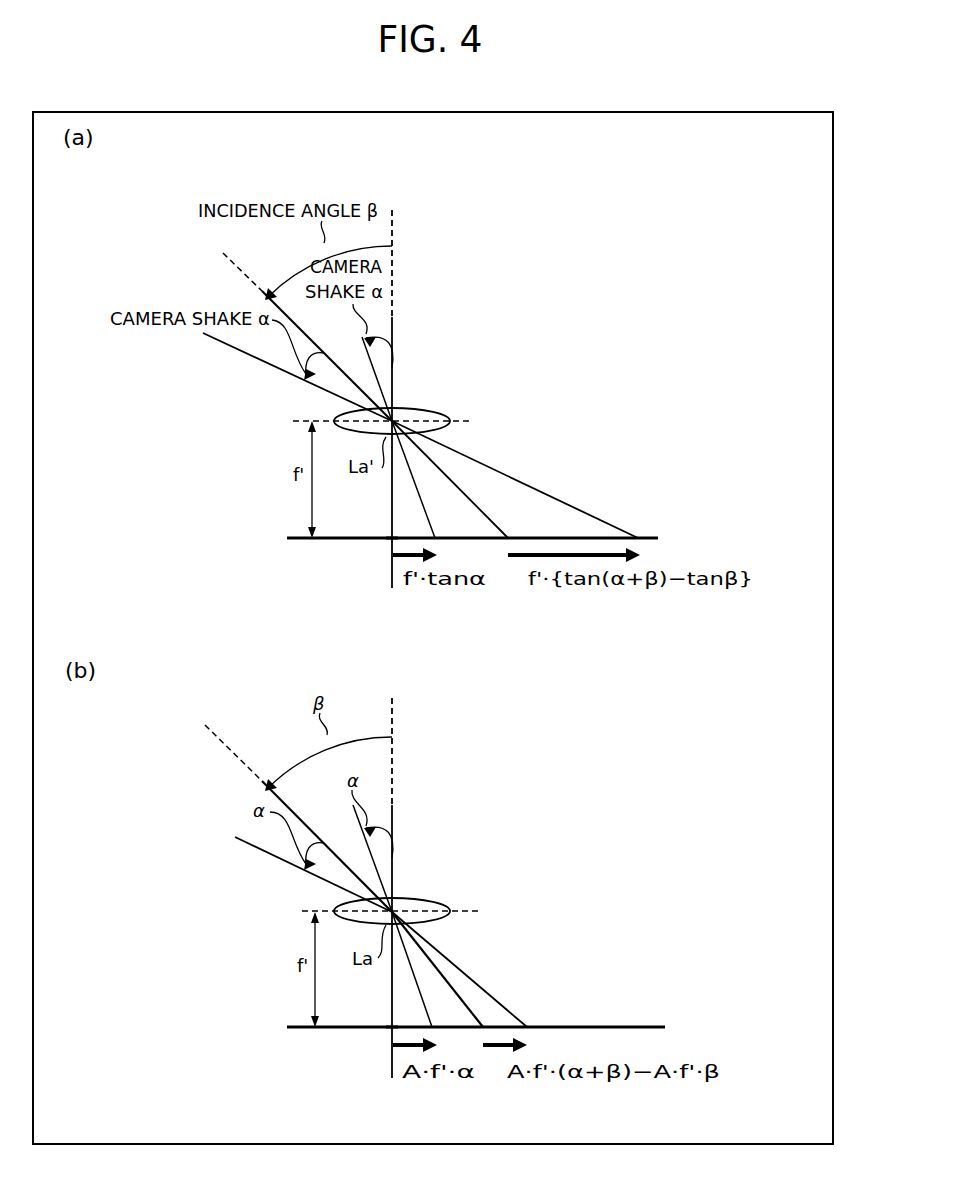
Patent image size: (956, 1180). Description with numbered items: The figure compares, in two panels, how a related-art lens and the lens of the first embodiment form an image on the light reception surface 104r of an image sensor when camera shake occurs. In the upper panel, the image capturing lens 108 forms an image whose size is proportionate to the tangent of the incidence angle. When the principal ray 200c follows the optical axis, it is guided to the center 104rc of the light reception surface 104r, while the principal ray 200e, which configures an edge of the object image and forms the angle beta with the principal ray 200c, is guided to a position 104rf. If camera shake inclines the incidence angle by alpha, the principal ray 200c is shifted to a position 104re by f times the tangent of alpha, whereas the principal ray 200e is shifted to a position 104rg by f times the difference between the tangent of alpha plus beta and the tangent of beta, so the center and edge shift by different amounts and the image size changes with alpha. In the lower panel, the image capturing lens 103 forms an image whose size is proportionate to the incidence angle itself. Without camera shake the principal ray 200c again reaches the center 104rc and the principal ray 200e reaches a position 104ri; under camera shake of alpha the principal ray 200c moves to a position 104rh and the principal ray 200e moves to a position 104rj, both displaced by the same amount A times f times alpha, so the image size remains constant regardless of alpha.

The image capturing lens 108 is at (447, 431).
The image capturing lens 103 is at (440, 900).
The principal ray 200c is at (393, 352).
The principal ray 200e is at (338, 392).
The light reception surface 104r is at (656, 541).
The center 104rc is at (392, 547).
The position 104re is at (437, 536).
The position 104rf is at (510, 536).
The position 104rg is at (638, 536).
The position 104rh is at (432, 1025).
The position 104ri is at (483, 1025).
The position 104rj is at (527, 1025).